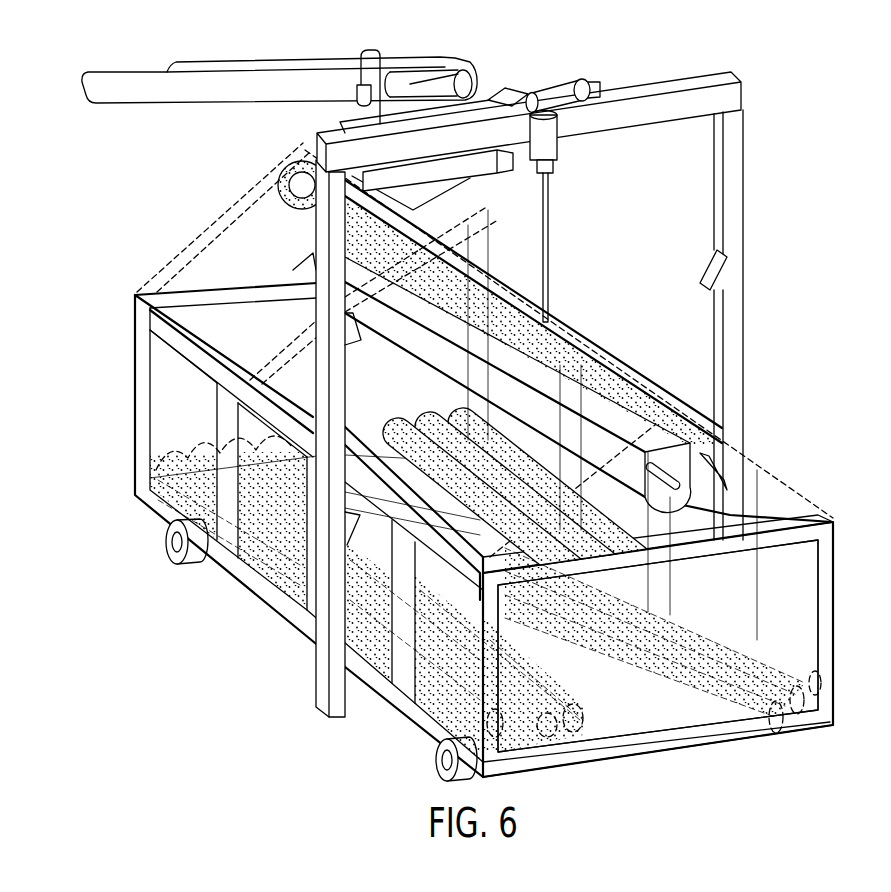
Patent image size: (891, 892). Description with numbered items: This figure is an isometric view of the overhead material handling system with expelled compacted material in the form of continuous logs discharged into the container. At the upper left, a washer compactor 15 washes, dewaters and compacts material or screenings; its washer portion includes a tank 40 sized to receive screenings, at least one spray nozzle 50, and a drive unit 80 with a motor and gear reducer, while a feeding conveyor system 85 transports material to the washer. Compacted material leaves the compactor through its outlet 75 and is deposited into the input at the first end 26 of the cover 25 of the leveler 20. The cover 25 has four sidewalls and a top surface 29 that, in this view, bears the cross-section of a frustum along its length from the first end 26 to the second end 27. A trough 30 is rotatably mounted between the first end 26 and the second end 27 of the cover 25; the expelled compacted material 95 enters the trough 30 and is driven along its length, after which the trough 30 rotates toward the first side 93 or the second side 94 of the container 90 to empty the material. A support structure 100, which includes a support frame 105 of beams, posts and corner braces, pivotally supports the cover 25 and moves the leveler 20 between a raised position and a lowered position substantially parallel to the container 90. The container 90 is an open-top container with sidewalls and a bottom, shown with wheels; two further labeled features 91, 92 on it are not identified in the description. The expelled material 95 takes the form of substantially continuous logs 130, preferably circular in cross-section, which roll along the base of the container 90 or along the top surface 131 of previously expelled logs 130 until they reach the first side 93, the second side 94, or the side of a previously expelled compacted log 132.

The washer compactor 15 is at (485, 389).
The leveler 20 is at (489, 534).
The cover 25 is at (156, 273).
The first end 26 is at (218, 215).
The second end 27 is at (582, 535).
The top surface 29 is at (634, 360).
The trough 30 is at (590, 366).
The tank 40 is at (476, 98).
The spray nozzle 50 is at (380, 62).
The outlet 75 is at (296, 188).
The drive unit 80 is at (556, 83).
The feeding conveyor system 85 is at (163, 118).
The container 90 is at (393, 723).
The front panel 91 is at (257, 585).
The side panel 92 is at (790, 590).
The first side 93 is at (250, 638).
The second side 94 is at (862, 630).
The expelled compacted material 95 is at (508, 262).
The support structure 100 is at (471, 376).
The support frame 105 is at (746, 246).
The log 130 is at (500, 740).
The top surface 131 is at (163, 453).
The side of a previously expelled compacted log 132 is at (658, 655).